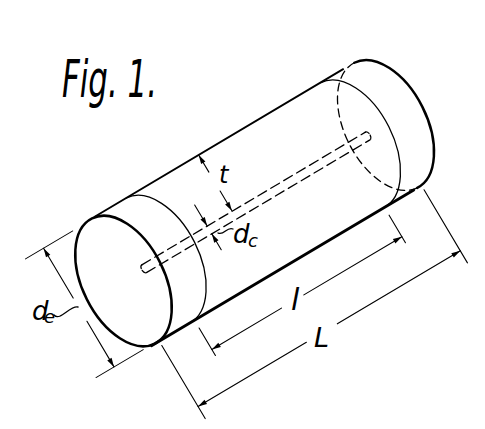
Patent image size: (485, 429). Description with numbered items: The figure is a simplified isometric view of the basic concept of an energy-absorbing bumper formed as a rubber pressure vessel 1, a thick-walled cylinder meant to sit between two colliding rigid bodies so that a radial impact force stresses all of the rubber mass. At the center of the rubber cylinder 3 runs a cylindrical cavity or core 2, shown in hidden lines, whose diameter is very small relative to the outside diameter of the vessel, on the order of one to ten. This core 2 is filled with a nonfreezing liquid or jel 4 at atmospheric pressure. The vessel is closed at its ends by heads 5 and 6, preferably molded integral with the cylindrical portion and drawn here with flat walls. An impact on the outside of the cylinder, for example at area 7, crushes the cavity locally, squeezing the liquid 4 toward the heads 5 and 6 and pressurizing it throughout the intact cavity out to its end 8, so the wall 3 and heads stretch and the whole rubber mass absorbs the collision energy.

The rubber pressure vessel 1 is at (289, 105).
The cylindrical cavity or core 2 is at (273, 188).
The rubber cylinder 3 is at (240, 130).
The nonfreezing liquid or jel 4 is at (301, 172).
The head of the vessel 5 is at (121, 204).
The head of the vessel 6 is at (349, 63).
The impact area 7 is at (141, 266).
The cavity end 8 is at (362, 124).